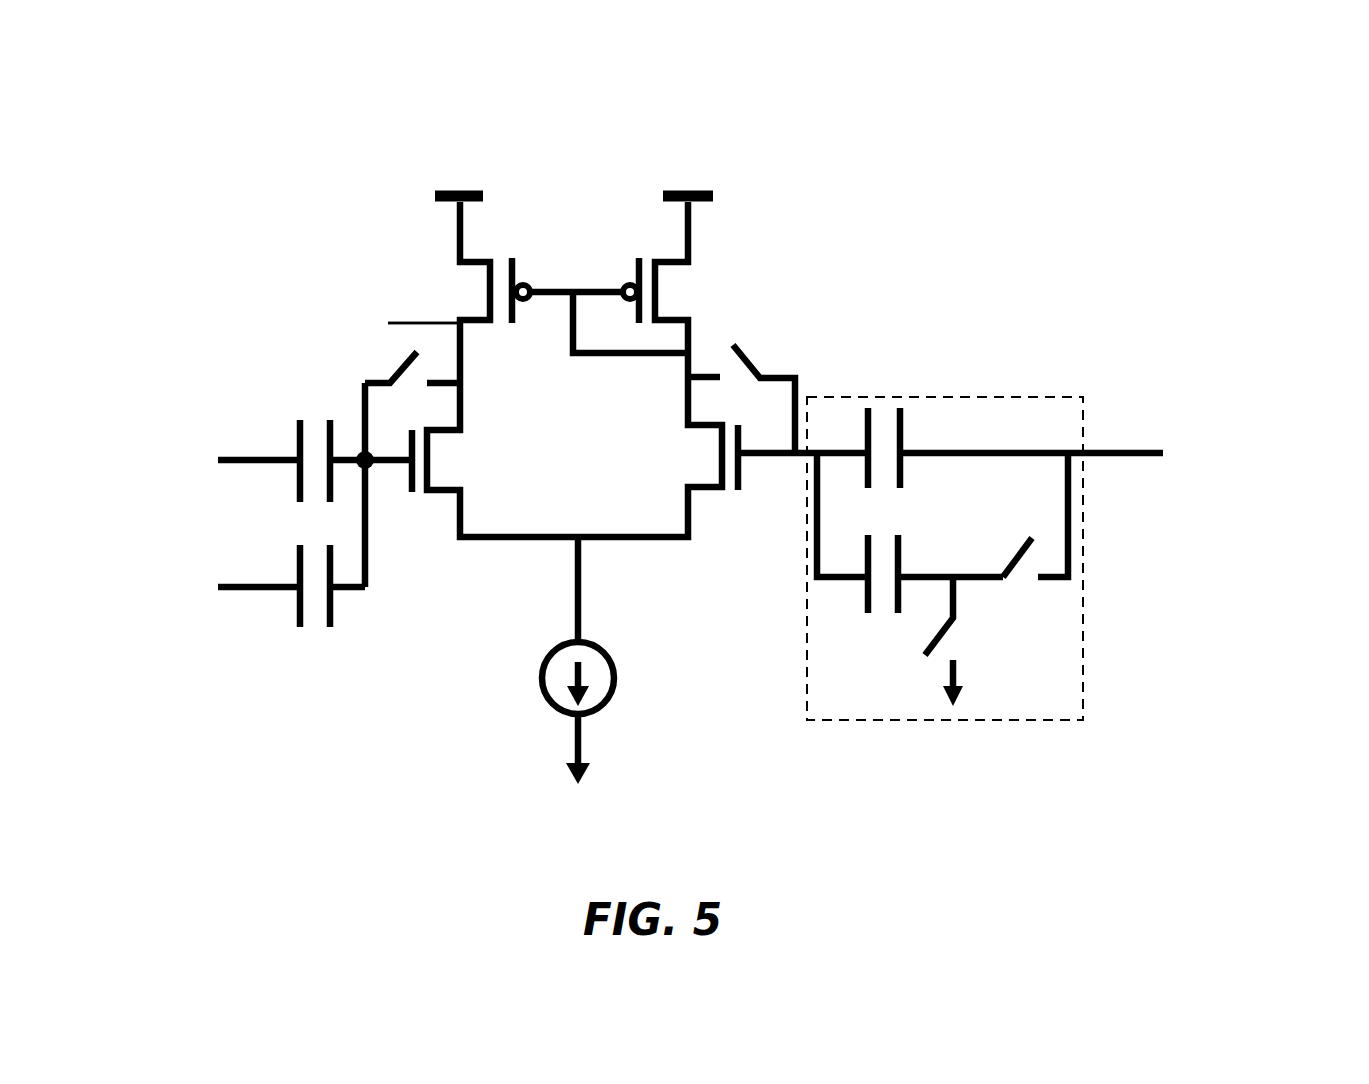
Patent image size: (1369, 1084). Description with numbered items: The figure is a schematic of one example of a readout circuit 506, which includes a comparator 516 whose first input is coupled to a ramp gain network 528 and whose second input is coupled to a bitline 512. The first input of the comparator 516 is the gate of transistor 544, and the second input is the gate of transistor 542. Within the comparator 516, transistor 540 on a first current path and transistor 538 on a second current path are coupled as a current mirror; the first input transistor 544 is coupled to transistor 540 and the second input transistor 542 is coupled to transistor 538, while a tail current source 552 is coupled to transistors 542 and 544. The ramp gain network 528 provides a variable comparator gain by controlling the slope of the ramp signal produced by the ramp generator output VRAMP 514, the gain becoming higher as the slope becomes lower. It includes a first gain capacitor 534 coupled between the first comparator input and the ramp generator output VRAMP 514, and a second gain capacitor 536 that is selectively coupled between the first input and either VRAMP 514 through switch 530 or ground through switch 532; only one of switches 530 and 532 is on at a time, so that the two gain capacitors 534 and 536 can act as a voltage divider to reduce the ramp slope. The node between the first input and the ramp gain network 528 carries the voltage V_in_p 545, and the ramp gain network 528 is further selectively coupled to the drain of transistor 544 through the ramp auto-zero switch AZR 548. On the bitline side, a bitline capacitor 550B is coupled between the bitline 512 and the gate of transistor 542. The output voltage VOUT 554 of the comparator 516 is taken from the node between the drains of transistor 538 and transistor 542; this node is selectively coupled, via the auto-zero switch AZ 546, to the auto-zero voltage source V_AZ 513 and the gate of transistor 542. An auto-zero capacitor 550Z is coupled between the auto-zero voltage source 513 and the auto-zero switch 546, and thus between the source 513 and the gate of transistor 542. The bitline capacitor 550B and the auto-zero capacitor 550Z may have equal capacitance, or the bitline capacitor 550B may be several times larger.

The readout circuit 506 is at (1048, 167).
The bitline 512 is at (176, 443).
The auto-zero voltage source 513 is at (176, 570).
The ramp generator output 514 is at (1247, 427).
The comparator 516 is at (480, 124).
The ramp gain network 528 is at (1046, 387).
The switch 530 is at (1019, 580).
The switch 532 is at (937, 665).
The first gain capacitor 534 is at (912, 443).
The second gain capacitor 536 is at (912, 563).
The transistor 538 is at (466, 293).
The transistor 540 is at (678, 293).
The transistor 542 is at (456, 463).
The transistor 544 is at (698, 463).
The voltage V_in_p 545 is at (782, 492).
The auto-zero switch 546 is at (357, 362).
The ramp auto-zero switch 548 is at (788, 340).
The bitline capacitor 550B is at (298, 438).
The auto-zero capacitor 550Z is at (298, 568).
The tail current source 552 is at (616, 680).
The output voltage 554 is at (326, 312).